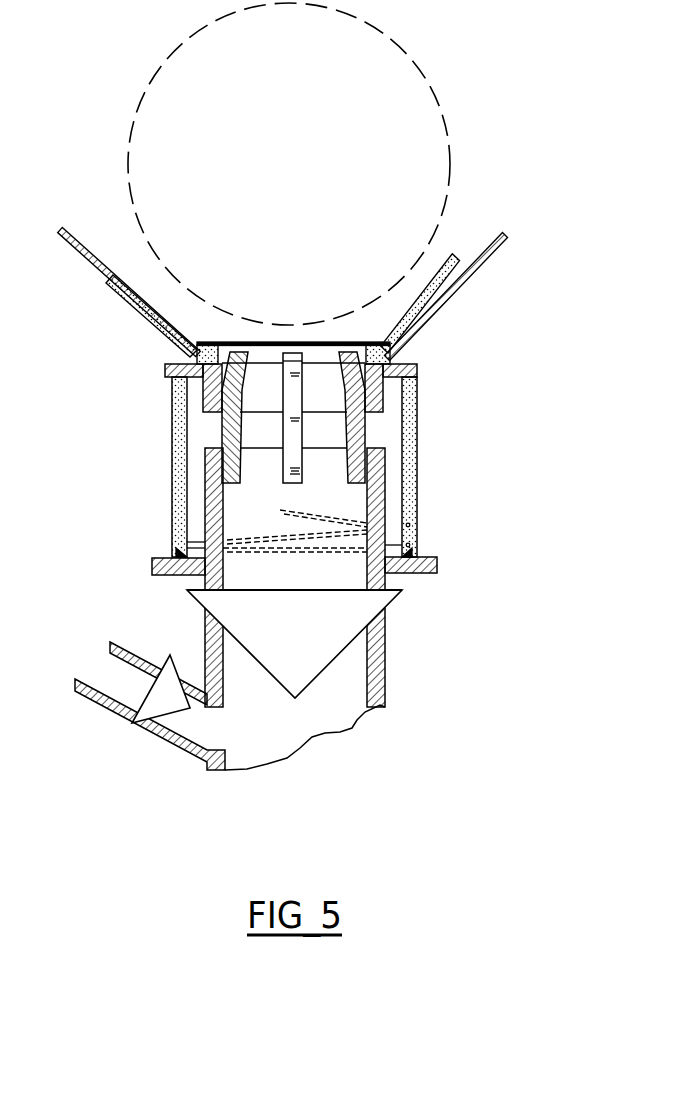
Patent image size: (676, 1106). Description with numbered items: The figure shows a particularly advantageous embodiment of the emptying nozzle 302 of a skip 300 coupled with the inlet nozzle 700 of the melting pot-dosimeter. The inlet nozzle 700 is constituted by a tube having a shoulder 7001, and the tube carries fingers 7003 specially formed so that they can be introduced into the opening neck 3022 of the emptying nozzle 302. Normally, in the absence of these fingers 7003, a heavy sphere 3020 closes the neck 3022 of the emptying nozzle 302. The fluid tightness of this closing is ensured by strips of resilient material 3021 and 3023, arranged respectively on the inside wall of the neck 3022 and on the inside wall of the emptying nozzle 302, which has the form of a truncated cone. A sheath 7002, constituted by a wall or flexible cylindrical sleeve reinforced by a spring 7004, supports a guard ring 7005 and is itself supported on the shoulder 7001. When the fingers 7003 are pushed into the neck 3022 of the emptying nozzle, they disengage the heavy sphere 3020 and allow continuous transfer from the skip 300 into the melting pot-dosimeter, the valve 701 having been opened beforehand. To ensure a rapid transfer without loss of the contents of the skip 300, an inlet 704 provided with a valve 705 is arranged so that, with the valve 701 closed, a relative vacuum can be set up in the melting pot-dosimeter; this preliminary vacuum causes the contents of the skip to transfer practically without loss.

The heavy sphere 3020 is at (433, 164).
The skip 300 is at (493, 253).
The strip of resilient material 3023 is at (128, 295).
The emptying nozzle 302 is at (413, 335).
The strip of resilient material 3021 is at (197, 349).
The guard ring 7005 is at (165, 376).
The opening neck 3022 is at (367, 389).
The fingers 7003 is at (360, 427).
The sheath 7002 is at (412, 472).
The spring 7004 is at (410, 537).
The shoulder 7001 is at (437, 565).
The valve 701 is at (368, 603).
The inlet nozzle 700 is at (385, 652).
The valve 705 is at (157, 694).
The inlet 704 is at (177, 740).